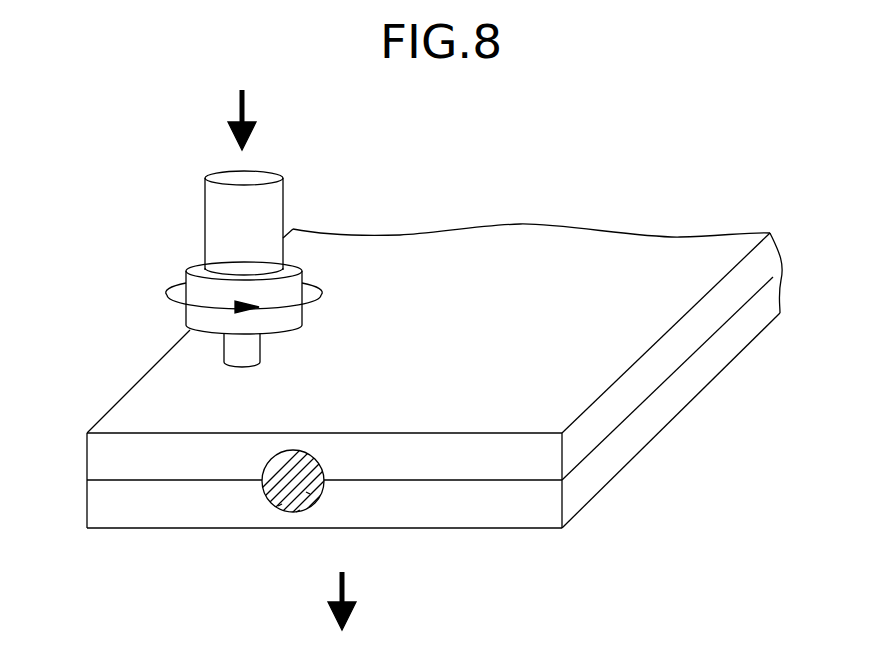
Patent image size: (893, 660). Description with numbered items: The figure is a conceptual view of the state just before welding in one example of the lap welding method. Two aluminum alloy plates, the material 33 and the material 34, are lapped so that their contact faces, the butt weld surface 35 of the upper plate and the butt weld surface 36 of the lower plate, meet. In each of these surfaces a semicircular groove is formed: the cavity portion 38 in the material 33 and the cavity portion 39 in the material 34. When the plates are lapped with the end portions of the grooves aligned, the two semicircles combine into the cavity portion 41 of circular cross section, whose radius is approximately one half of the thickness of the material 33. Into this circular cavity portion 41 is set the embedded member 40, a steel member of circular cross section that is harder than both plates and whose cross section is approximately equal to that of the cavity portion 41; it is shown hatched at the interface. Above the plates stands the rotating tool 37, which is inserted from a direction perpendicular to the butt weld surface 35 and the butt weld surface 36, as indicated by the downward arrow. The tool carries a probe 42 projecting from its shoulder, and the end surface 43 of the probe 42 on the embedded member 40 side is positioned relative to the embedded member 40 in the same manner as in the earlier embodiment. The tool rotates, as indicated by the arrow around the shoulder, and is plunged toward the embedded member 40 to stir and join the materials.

The material 33 is at (753, 265).
The material 34 is at (680, 392).
The butt weld surface 35 is at (118, 480).
The butt weld surface 36 is at (162, 482).
The rotating tool 37 is at (283, 198).
The cavity portion 38 is at (310, 452).
The cavity portion 39 is at (302, 510).
The embedded member 40 is at (308, 493).
The cavity portion 41 is at (280, 505).
The probe 42 is at (223, 350).
The end surface 43 is at (272, 352).